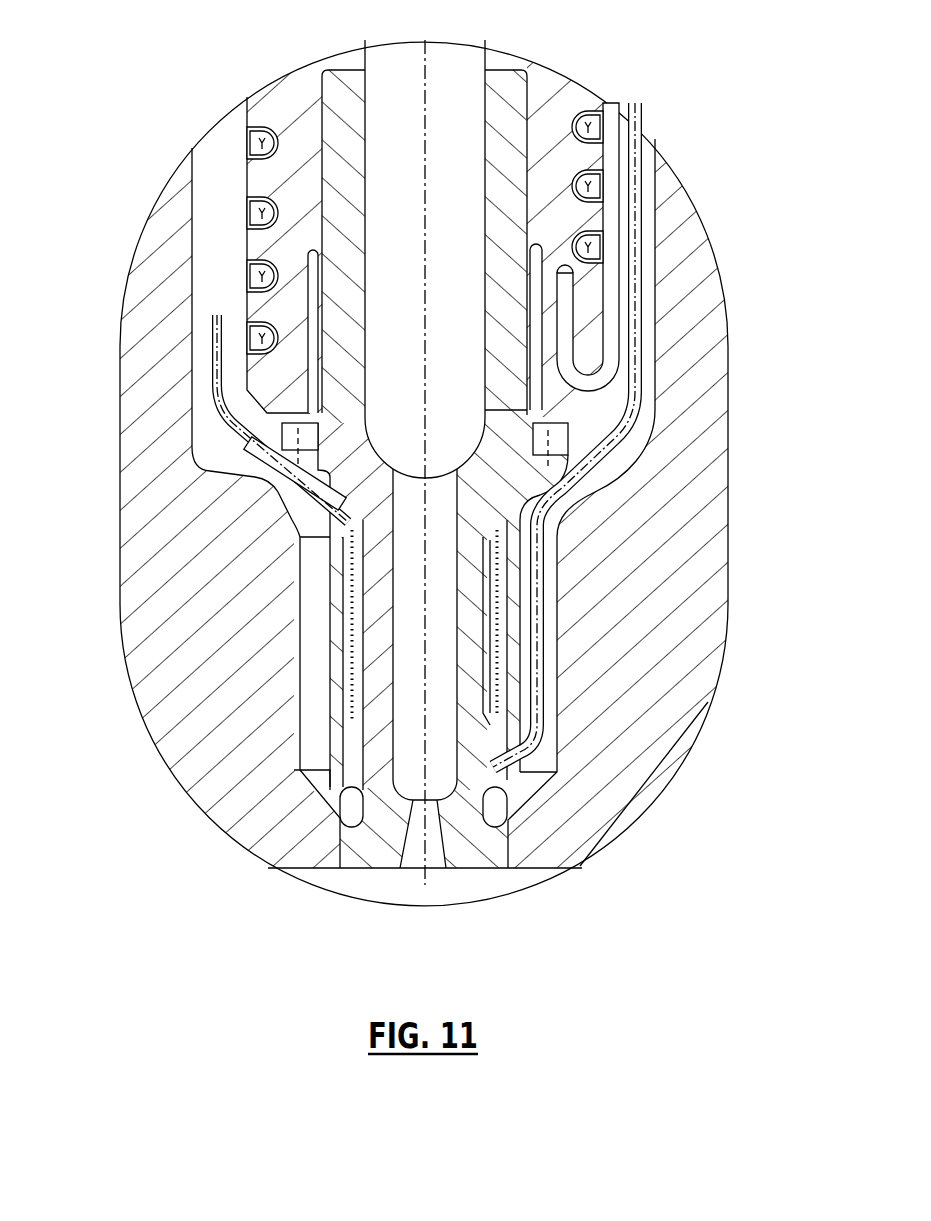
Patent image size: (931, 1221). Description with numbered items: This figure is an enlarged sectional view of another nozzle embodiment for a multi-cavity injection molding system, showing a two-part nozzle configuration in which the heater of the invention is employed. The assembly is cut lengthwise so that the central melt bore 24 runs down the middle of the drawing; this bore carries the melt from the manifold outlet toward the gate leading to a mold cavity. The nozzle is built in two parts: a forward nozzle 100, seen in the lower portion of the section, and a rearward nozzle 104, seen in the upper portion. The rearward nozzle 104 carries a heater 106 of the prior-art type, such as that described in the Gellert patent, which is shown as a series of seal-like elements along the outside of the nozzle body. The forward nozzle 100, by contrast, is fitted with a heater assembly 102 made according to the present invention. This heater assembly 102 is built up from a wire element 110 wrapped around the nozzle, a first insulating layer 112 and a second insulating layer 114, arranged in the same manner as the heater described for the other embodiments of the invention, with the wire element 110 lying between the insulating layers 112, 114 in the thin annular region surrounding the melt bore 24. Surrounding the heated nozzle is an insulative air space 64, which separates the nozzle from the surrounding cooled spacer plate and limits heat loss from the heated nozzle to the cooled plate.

The central melt bore 24 is at (455, 424).
The insulative air space 64 is at (247, 483).
The forward nozzle 100 is at (475, 505).
The heater assembly 102 is at (500, 615).
The rearward nozzle 104 is at (570, 222).
The heater 106 is at (593, 247).
The wire element 110 is at (495, 640).
The first insulating layer 112 is at (490, 672).
The second insulating layer 114 is at (497, 700).